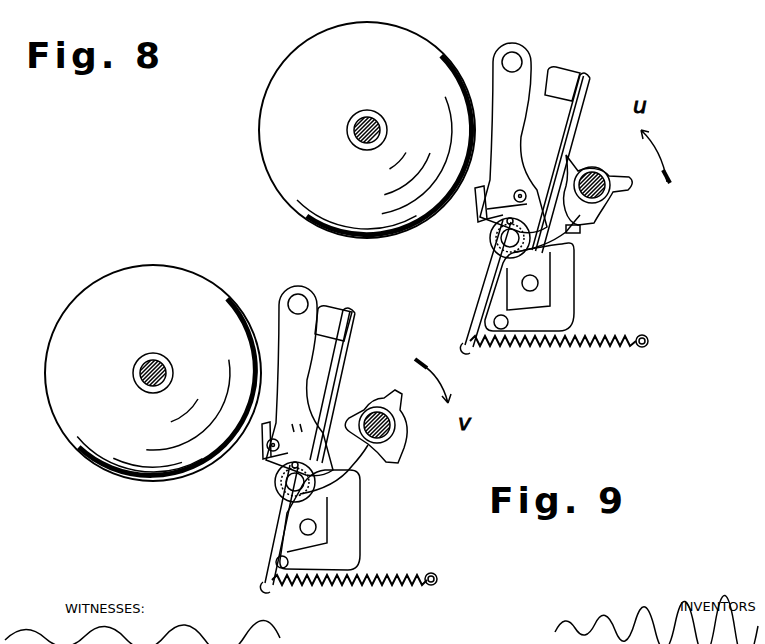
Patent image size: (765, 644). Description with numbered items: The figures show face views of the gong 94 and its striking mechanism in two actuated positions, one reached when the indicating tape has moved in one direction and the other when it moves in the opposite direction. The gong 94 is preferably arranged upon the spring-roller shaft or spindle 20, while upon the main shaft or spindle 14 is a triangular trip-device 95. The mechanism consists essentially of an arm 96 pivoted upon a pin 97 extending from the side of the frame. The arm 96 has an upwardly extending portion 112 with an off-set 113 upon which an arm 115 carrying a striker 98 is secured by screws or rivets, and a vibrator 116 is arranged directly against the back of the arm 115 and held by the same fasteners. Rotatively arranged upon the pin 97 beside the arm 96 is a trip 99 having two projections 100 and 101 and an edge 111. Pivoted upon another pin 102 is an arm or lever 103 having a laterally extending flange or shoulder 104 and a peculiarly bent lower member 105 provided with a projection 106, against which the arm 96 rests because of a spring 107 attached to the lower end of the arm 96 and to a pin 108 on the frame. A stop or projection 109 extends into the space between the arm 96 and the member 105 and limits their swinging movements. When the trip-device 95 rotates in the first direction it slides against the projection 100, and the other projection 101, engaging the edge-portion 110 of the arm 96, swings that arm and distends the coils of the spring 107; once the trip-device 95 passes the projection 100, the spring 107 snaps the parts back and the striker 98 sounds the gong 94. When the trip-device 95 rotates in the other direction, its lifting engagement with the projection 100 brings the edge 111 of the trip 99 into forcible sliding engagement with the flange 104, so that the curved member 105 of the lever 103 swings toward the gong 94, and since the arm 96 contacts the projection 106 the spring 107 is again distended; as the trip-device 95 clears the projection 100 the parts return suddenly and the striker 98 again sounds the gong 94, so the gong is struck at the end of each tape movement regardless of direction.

In FIG. 8, the main shaft or spindle 14 is at (598, 178).
In FIG. 9, the main shaft or spindle 14 is at (394, 432).
In FIG. 8, the spring-roller shaft or spindle 20 is at (367, 117).
In FIG. 9, the spring-roller shaft or spindle 20 is at (156, 362).
In FIG. 8, the gong 94 is at (262, 173).
In FIG. 8, the trip-device 95 is at (585, 210).
In FIG. 9, the trip-device 95 is at (396, 393).
In FIG. 8, the arm 96 is at (483, 286).
In FIG. 9, the arm 96 is at (272, 536).
In FIG. 8, the pin 97 is at (505, 240).
In FIG. 9, the pin 97 is at (290, 485).
In FIG. 8, the striker 98 is at (566, 70).
In FIG. 9, the striker 98 is at (342, 308).
In FIG. 8, the trip 99 is at (590, 255).
In FIG. 9, the trip 99 is at (326, 431).
In FIG. 8, the projection 100 is at (582, 233).
In FIG. 8, the projection 101 is at (518, 190).
In FIG. 9, the projection 101 is at (270, 452).
In FIG. 8, the pin 102 is at (511, 59).
In FIG. 9, the pin 102 is at (300, 300).
In FIG. 8, the arm or lever 103 is at (493, 77).
In FIG. 9, the arm or lever 103 is at (283, 312).
In FIG. 8, the flange or shoulder 104 is at (486, 215).
In FIG. 9, the flange or shoulder 104 is at (266, 458).
In FIG. 8, the lower part or member 105 is at (565, 303).
In FIG. 9, the lower part or member 105 is at (352, 518).
In FIG. 8, the projection 106 is at (494, 322).
In FIG. 9, the projection 106 is at (288, 563).
In FIG. 8, the spring 107 is at (581, 350).
In FIG. 9, the spring 107 is at (391, 588).
In FIG. 8, the pin 108 is at (650, 342).
In FIG. 9, the pin 108 is at (437, 580).
In FIG. 8, the stop or projection 109 is at (538, 284).
In FIG. 9, the stop or projection 109 is at (316, 528).
In FIG. 8, the edge-portion 110 is at (522, 214).
In FIG. 9, the edge 111 is at (301, 415).
In FIG. 8, the upwardly extending portion 112 is at (553, 257).
In FIG. 9, the upwardly extending portion 112 is at (338, 490).
In FIG. 8, the off-set 113 is at (545, 247).
In FIG. 9, the off-set 113 is at (332, 470).
In FIG. 8, the arm 115 is at (567, 117).
In FIG. 9, the arm 115 is at (340, 355).
In FIG. 8, the vibrator 116 is at (590, 86).
In FIG. 9, the vibrator 116 is at (356, 327).